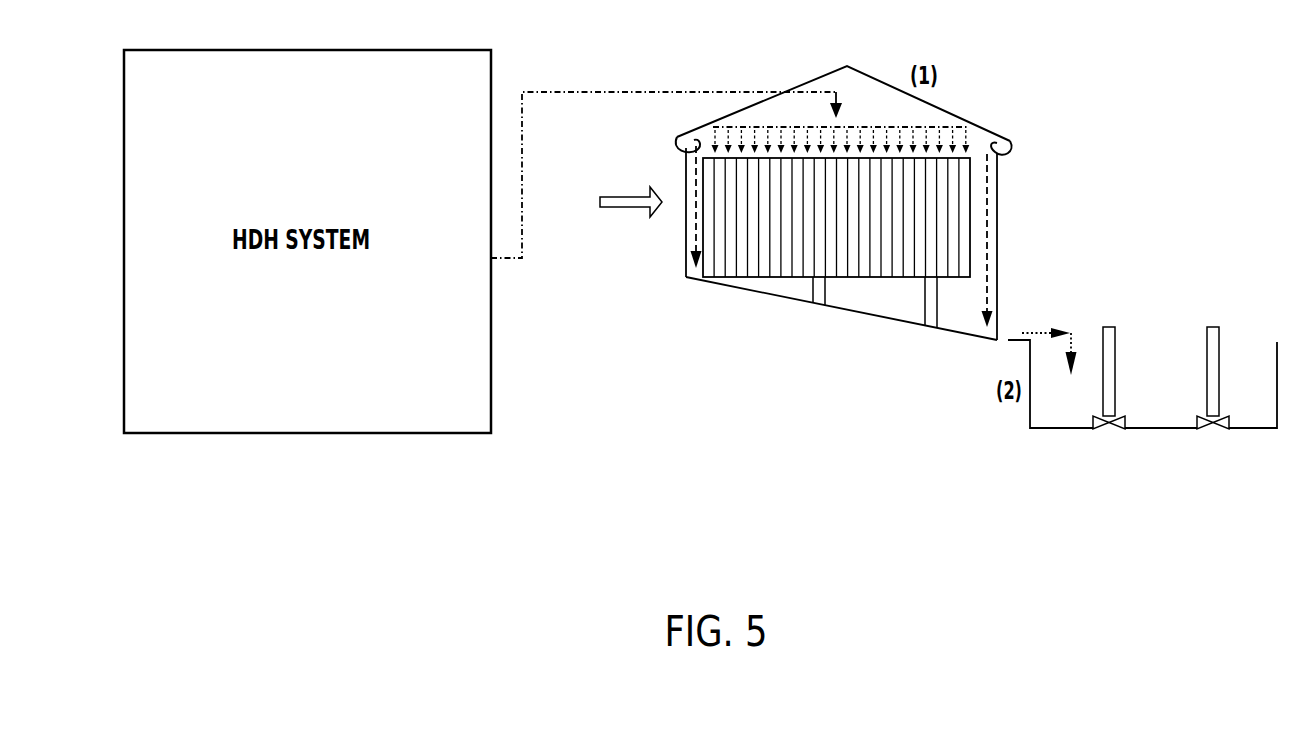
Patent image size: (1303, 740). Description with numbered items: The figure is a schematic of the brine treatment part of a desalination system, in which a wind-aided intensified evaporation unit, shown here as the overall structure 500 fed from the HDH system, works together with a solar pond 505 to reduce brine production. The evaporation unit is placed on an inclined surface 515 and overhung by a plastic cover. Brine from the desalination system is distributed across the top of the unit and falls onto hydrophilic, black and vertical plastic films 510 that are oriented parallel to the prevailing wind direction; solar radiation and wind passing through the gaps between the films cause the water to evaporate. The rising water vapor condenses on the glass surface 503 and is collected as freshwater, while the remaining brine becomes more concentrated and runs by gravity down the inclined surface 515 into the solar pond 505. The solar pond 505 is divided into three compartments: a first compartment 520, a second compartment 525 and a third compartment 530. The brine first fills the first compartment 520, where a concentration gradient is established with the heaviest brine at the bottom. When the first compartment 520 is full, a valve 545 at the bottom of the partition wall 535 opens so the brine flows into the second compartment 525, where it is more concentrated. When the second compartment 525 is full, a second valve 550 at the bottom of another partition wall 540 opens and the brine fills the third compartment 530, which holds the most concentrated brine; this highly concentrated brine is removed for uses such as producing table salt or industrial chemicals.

The greenhouse / solar still structure 500 is at (953, 75).
The glass surface 503 is at (685, 244).
The solar pond 505 is at (1213, 297).
The vertical plastic films 510 is at (963, 252).
The inclined surface 515 is at (957, 336).
The first compartment 520 is at (1043, 418).
The second compartment 525 is at (1153, 418).
The third compartment 530 is at (1257, 418).
The partition wall 535 is at (1110, 352).
The second partition wall 540 is at (1214, 342).
The valve 545 is at (1095, 425).
The second valve 550 is at (1204, 425).